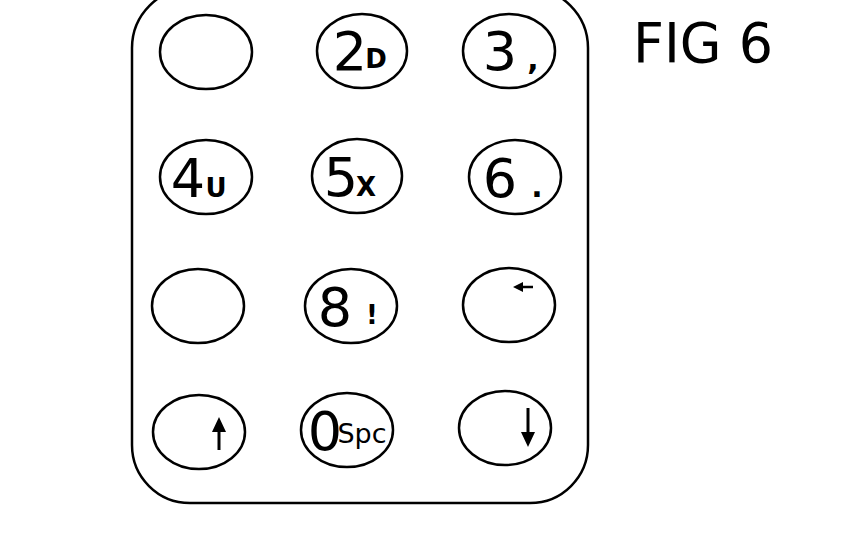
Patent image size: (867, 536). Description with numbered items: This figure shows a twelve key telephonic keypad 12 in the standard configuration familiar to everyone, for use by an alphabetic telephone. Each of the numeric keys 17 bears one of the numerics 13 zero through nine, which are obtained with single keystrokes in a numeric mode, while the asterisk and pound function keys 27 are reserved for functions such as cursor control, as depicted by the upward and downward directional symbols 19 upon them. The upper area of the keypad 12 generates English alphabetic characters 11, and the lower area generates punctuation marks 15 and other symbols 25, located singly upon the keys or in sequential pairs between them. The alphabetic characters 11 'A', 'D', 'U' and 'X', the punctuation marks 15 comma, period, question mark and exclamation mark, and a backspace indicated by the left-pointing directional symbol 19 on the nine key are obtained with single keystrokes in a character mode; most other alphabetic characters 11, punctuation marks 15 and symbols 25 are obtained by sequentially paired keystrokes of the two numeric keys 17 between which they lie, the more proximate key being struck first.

The alphabetic characters 11 is at (168, 118).
The keypad 12 is at (568, 364).
The numerics 13 is at (188, 62).
The punctuation marks 15 is at (543, 232).
The numeric keys 17 is at (153, 313).
The directional symbols 19 is at (547, 295).
The symbols 25 is at (180, 242).
The function keys 27 is at (153, 437).